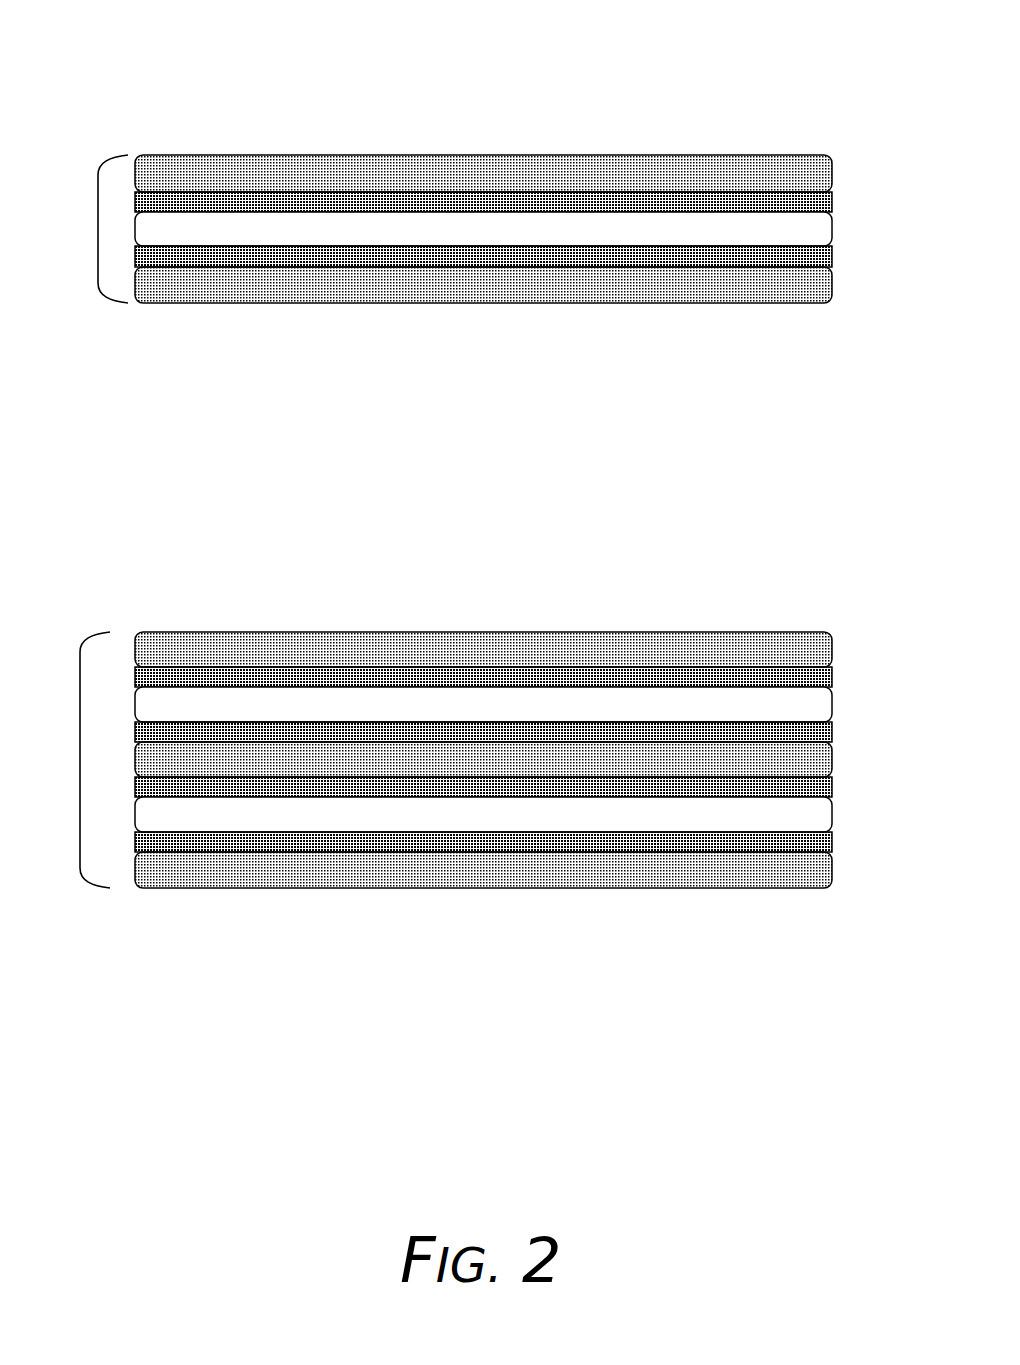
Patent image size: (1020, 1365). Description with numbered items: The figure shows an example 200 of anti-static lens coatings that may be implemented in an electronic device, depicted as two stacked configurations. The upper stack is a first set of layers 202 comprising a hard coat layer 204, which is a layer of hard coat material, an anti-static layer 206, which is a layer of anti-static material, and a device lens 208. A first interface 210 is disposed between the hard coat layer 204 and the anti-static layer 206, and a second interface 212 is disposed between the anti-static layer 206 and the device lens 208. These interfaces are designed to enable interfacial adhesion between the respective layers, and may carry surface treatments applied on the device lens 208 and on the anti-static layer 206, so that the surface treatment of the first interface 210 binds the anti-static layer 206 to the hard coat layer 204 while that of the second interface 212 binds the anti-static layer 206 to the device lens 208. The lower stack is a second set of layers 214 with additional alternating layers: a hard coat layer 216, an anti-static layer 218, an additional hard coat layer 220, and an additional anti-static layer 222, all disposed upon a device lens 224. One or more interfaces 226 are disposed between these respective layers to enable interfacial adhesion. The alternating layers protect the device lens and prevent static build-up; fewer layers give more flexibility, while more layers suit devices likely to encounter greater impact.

The example of anti-static lens coatings 200 is at (432, 76).
The first set of layers 202 is at (98, 229).
The hard coat layer 204 is at (325, 168).
The anti-static layer 206 is at (815, 227).
The device lens 208 is at (571, 290).
The first interface 210 is at (832, 196).
The second interface 212 is at (831, 258).
The second set of layers 214 is at (80, 760).
The hard coat layer 216 is at (325, 643).
The anti-static layer 218 is at (812, 706).
The additional hard coat layer 220 is at (812, 762).
The additional anti-static layer 222 is at (812, 816).
The device lens 224 is at (571, 877).
The interfaces 226 is at (832, 673).